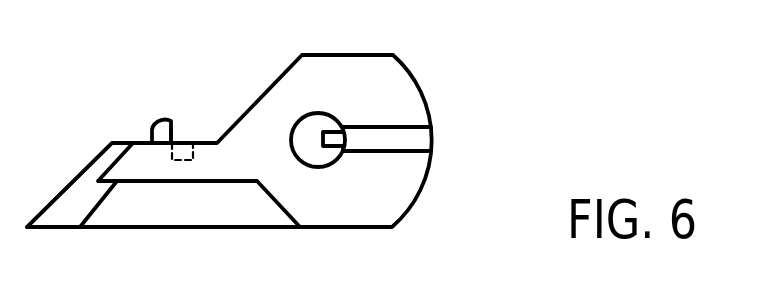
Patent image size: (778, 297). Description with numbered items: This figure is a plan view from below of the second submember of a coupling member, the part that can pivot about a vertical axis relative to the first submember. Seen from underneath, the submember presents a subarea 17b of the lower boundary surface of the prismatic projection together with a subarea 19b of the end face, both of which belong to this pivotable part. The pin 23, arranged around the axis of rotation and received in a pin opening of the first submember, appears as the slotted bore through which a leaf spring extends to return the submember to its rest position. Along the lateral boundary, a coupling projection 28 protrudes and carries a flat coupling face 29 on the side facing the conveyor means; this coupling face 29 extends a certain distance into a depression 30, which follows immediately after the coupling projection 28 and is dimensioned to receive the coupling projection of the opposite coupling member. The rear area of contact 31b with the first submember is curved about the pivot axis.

The subarea of the lower boundary surface 17b is at (197, 197).
The subarea of the end face 19b is at (77, 198).
The pin 23 is at (318, 158).
The coupling projection 28 is at (157, 122).
The coupling face 29 is at (178, 131).
The depression 30 is at (193, 143).
The rear area of contact 31b is at (421, 92).